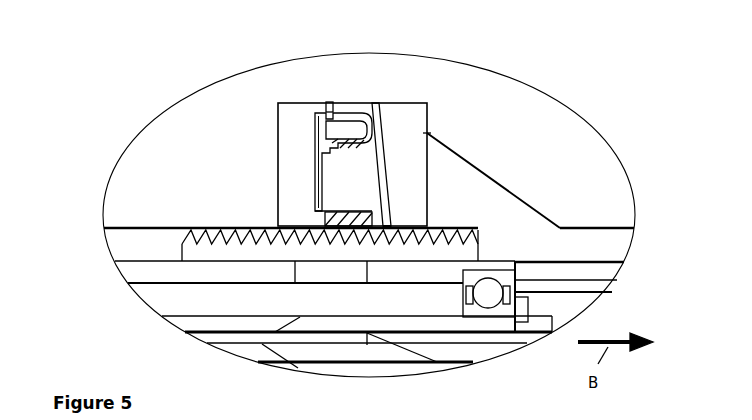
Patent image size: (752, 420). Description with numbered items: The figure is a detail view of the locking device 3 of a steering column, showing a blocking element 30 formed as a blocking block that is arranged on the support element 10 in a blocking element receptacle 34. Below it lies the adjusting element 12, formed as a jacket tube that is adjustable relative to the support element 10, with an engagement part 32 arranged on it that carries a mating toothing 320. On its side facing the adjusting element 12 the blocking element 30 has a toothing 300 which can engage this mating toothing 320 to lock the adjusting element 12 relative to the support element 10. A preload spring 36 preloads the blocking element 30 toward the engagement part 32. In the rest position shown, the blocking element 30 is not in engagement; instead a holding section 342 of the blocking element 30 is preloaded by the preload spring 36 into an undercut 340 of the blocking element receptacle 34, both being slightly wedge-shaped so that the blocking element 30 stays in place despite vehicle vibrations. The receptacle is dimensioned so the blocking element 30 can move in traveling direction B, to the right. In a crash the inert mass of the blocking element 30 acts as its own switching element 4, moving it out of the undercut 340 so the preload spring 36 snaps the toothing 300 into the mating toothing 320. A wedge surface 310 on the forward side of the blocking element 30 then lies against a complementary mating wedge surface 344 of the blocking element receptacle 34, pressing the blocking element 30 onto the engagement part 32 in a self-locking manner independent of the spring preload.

The locking device 3 is at (328, 71).
The switching element 4 is at (314, 140).
The support element 10 is at (493, 213).
The adjusting element 12 is at (160, 275).
The blocking element 30 is at (398, 138).
The engagement part 32 is at (202, 257).
The blocking element receptacle 34 is at (387, 213).
The preload spring 36 is at (368, 165).
The toothing 300 is at (275, 246).
The wedge surface 310 is at (380, 170).
The mating toothing 320 is at (201, 232).
The undercut 340 is at (315, 213).
The holding section 342 is at (313, 195).
The mating wedge surface 344 is at (395, 185).